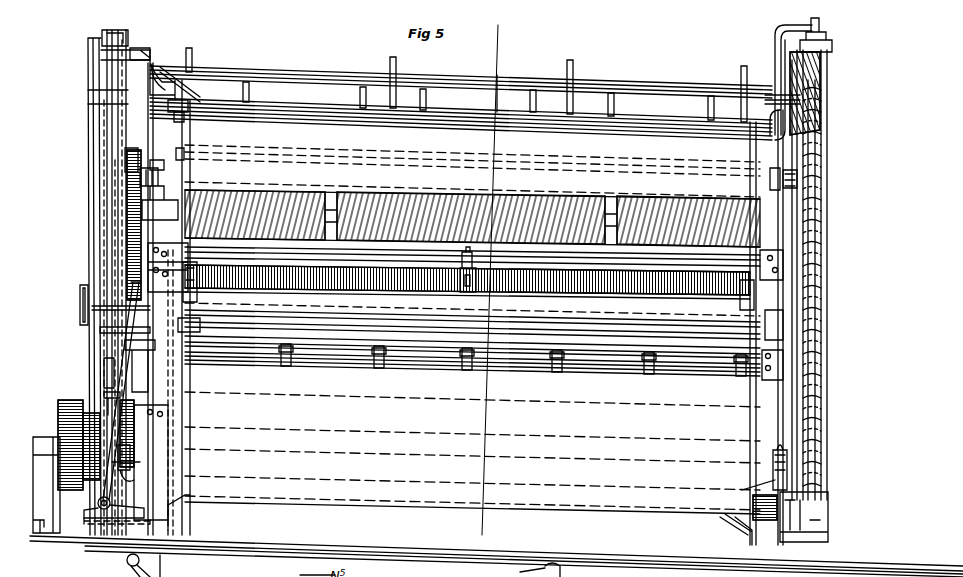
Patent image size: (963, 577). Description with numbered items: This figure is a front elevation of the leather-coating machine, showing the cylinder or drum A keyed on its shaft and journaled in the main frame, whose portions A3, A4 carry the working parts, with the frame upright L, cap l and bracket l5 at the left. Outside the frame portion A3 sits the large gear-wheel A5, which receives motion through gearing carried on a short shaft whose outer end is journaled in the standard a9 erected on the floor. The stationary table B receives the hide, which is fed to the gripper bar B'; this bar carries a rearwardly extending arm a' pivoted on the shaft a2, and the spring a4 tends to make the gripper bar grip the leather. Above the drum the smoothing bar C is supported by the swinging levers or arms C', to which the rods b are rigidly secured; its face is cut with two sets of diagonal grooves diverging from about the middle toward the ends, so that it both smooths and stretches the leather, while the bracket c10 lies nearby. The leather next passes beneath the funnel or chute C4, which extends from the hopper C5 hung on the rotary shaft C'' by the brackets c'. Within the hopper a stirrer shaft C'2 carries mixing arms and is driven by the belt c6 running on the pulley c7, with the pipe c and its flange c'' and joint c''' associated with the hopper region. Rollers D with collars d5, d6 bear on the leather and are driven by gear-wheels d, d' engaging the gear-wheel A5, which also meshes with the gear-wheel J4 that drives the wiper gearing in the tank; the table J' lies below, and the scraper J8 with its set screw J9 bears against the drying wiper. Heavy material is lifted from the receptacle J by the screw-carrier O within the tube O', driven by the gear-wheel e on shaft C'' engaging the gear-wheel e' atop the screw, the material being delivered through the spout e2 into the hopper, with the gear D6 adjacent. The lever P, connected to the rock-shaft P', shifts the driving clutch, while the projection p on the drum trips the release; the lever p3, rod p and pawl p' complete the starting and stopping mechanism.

The frame upright L is at (110, 122).
The cap l is at (118, 38).
The bracket l5 is at (150, 50).
The pulley c7 is at (104, 88).
The belt c6 is at (104, 104).
The pipe c is at (150, 81).
The pipe flange c'' is at (172, 123).
The pipe joint c''' is at (170, 153).
The spout e2 is at (798, 185).
The rotary shaft C'' is at (602, 186).
The hopper C5 is at (472, 162).
The roller D is at (472, 218).
The roller collar d5 is at (339, 216).
The roller collar d6 is at (623, 220).
The rotary shaft C'2 is at (472, 254).
The funnel or chute C4 is at (467, 271).
The gripper bar B' is at (460, 280).
The bar C is at (472, 308).
The swinging levers or arms C' is at (472, 315).
The rods b is at (473, 286).
The bracket c10 is at (198, 323).
The cylinder or drum A is at (472, 323).
The table B is at (472, 340).
The scraper J8 is at (472, 354).
The set screw J9 is at (513, 363).
The table J' is at (472, 453).
The gear-wheel d' is at (102, 165).
The gear-wheel A5 is at (128, 256).
The gear-wheel d is at (122, 193).
The lever p3 is at (92, 306).
The projection p is at (102, 331).
The lever P is at (101, 391).
The pawl p' is at (130, 366).
The spring a4 is at (107, 403).
The shaft a2 is at (98, 438).
The arm a' is at (144, 460).
The standard a9 is at (46, 485).
The gear-wheel J4 is at (449, 474).
The rock-shaft P' is at (102, 507).
The receptacle J is at (117, 525).
The frame portion A3 is at (165, 524).
The frame portion A4 is at (752, 538).
The screw-carrier O is at (820, 275).
The tube O' is at (819, 280).
The gear-wheel e' is at (821, 76).
The gear D6 is at (828, 192).
The gear-wheel e is at (781, 82).
The brackets c' is at (775, 78).